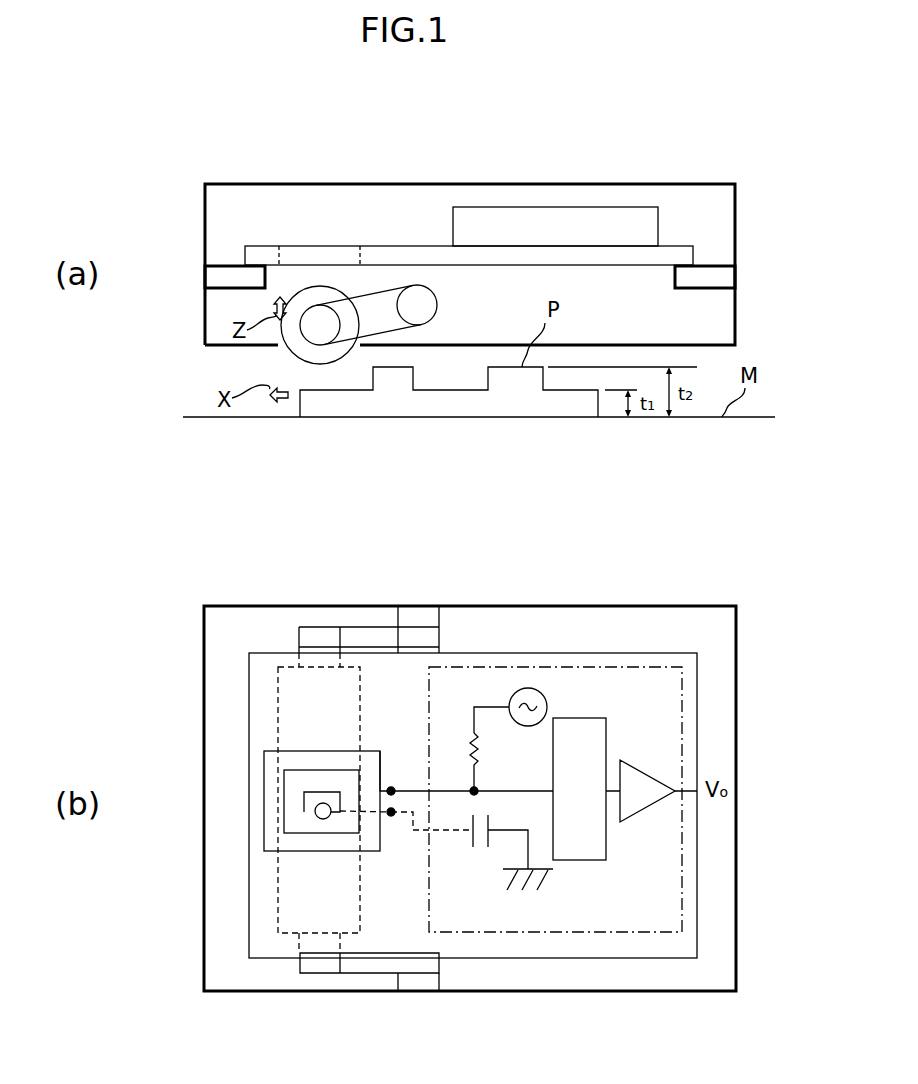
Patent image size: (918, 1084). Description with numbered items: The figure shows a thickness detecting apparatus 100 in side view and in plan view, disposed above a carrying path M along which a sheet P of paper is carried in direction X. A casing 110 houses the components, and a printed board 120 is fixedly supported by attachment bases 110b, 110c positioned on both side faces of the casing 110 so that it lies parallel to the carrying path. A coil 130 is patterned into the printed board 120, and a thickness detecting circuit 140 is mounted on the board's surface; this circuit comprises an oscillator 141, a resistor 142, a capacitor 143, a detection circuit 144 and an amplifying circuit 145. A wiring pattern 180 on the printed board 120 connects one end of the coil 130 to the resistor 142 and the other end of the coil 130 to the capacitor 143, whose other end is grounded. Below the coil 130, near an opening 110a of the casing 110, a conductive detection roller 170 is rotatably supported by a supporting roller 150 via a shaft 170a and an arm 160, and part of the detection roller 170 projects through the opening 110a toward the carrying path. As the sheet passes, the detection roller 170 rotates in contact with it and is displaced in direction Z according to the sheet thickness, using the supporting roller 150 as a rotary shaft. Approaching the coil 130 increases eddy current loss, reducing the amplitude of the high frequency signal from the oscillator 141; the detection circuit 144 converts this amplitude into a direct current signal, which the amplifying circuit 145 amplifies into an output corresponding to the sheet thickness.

The thickness detecting apparatus 100 is at (704, 154).
The casing 110 is at (368, 184).
The opening 110a is at (278, 350).
The attachment base 110b is at (218, 277).
The attachment base 110c is at (730, 278).
The printed board 120 is at (397, 251).
The coil 130 is at (331, 243).
The thickness detecting circuit 140 is at (525, 207).
The oscillator 141 is at (547, 692).
The resistor 142 is at (478, 752).
The capacitor 143 is at (470, 838).
The detection circuit 144 is at (593, 718).
The amplifying circuit 145 is at (633, 767).
The supporting roller 150 is at (437, 306).
The arm 160 is at (390, 328).
The detection roller 170 is at (300, 298).
The shaft 170a is at (318, 316).
The wiring pattern 180 is at (403, 813).